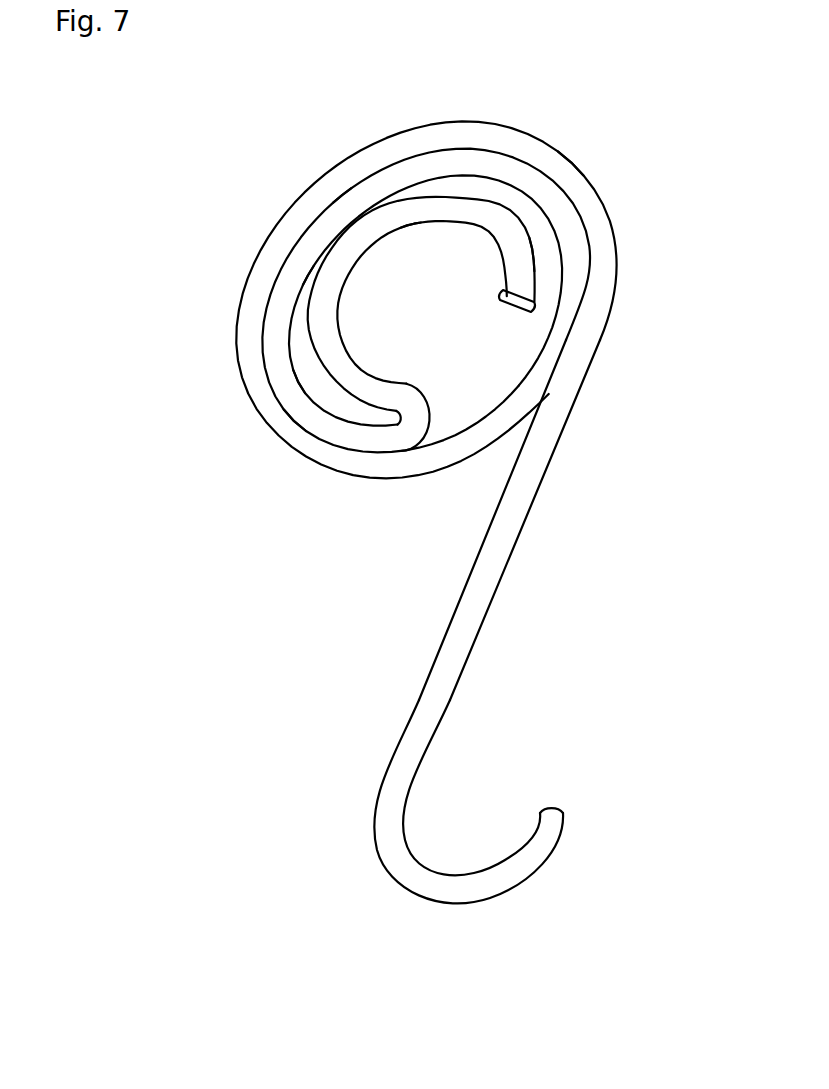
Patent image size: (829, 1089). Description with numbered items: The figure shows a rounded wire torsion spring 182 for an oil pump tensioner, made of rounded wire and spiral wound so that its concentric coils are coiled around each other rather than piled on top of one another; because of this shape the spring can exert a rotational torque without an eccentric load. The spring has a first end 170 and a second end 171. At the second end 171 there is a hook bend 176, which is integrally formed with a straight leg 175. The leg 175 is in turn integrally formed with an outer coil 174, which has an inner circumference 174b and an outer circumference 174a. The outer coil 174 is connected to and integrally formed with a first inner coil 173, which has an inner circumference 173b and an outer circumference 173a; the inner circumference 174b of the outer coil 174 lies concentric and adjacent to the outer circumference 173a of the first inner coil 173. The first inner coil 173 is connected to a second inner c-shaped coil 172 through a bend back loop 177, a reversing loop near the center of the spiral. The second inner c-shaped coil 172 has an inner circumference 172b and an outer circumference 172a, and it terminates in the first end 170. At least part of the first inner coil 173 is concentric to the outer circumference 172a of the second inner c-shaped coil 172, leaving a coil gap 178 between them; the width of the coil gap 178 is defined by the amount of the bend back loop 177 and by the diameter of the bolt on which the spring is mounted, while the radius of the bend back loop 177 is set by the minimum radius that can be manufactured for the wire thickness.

The first end 170 is at (514, 309).
The second end 171 is at (551, 816).
The second inner c-shaped coil 172 is at (423, 217).
The outer circumference of the second inner c-shaped coil 172a is at (536, 258).
The inner circumference of the second inner c-shaped coil 172b is at (412, 228).
The first inner coil 173 is at (423, 182).
The outer circumference of the first inner coil 173a is at (302, 431).
The inner circumference of the first inner coil 173b is at (303, 305).
The outer coil 174 is at (510, 146).
The outer circumference of the outer coil 174a is at (570, 150).
The inner circumference of the outer coil 174b is at (338, 195).
The leg 175 is at (477, 633).
The hook bend 176 is at (430, 887).
The bend back loop 177 is at (397, 424).
The coil gap 178 is at (322, 376).
The rounded wire torsion spring 182 is at (409, 339).